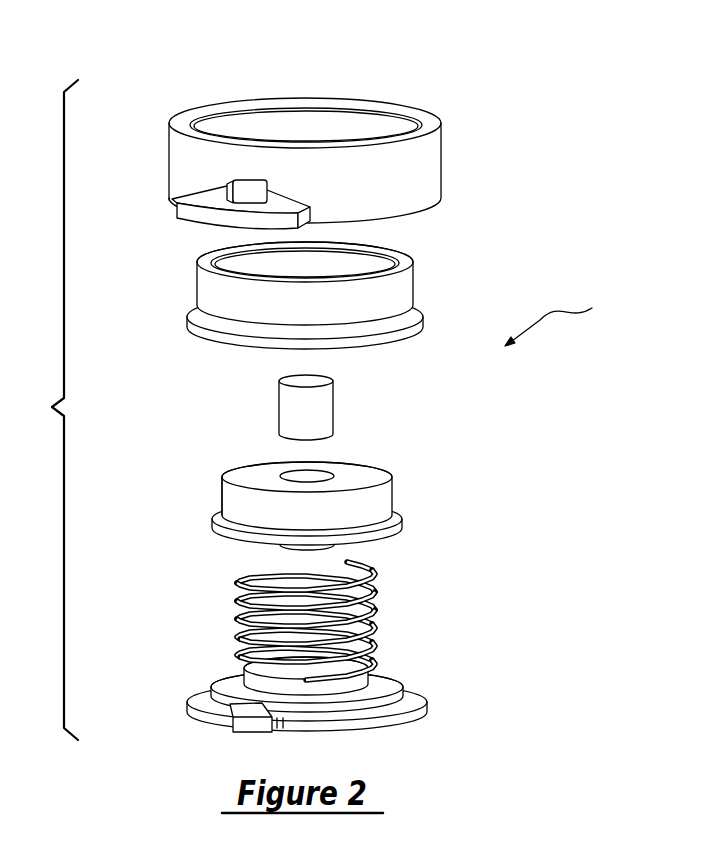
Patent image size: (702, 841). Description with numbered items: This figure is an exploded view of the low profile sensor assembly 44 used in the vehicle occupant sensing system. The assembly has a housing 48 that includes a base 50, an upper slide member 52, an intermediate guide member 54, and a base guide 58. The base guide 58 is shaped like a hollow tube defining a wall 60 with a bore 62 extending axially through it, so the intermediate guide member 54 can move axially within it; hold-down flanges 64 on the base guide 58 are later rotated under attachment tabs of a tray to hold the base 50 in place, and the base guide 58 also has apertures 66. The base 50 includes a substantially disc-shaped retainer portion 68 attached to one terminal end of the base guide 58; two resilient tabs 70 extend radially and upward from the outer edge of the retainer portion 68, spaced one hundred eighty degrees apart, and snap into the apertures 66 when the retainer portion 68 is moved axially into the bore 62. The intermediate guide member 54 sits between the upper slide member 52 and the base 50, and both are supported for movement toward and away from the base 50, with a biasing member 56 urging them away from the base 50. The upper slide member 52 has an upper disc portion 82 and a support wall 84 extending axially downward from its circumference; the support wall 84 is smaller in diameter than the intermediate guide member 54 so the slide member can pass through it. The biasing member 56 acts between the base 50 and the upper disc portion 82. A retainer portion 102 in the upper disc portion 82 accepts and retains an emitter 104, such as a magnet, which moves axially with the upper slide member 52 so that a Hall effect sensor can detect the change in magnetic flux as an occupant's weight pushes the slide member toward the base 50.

The low profile sensor assembly 44 is at (39, 410).
The housing 48 is at (562, 317).
The base 50 is at (320, 709).
The upper slide member 52 is at (313, 491).
The intermediate guide member 54 is at (409, 292).
The biasing member 56 is at (377, 623).
The base guide 58 is at (340, 130).
The wall 60 is at (429, 187).
The bore 62 is at (297, 103).
The hold-down flange 64 is at (190, 213).
The aperture 66 is at (240, 192).
The retainer portion 68 is at (367, 722).
The resilient tab 70 is at (240, 710).
The upper disc portion 82 is at (361, 472).
The support wall 84 is at (239, 500).
The retainer portion 102 is at (300, 474).
The emitter 104 is at (331, 410).